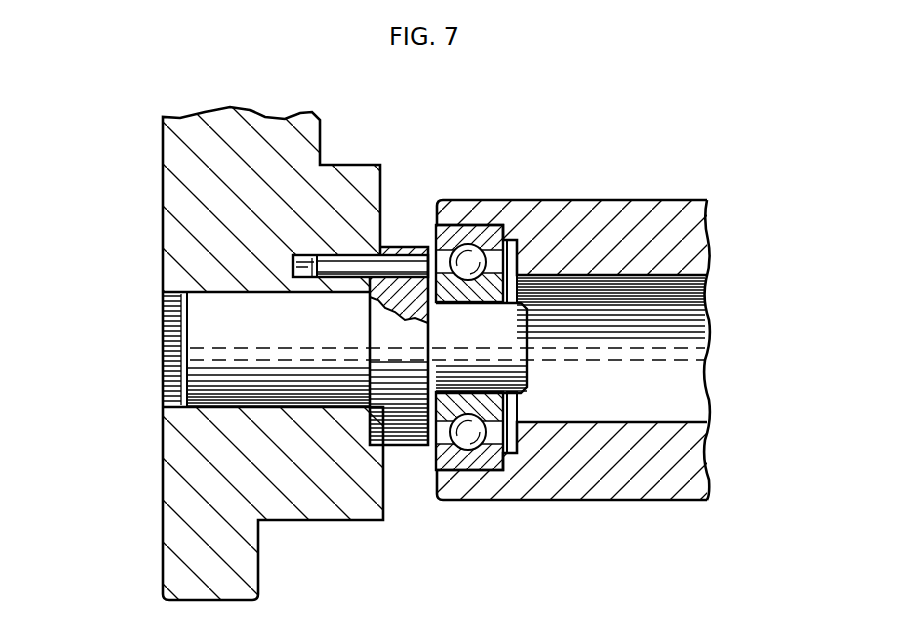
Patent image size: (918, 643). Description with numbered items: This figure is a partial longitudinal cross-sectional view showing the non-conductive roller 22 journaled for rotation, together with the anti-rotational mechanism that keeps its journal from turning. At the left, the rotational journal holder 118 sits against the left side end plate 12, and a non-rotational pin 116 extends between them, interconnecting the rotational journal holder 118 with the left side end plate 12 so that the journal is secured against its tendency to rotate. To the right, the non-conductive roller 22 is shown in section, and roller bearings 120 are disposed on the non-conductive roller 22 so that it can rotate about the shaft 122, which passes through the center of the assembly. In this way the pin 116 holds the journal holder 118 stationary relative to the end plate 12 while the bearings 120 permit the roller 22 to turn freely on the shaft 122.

The left side end plate 12 is at (200, 207).
The non-conductive roller 22 is at (610, 200).
The non-rotational pin 116 is at (340, 262).
The rotational journal holder 118 is at (400, 433).
The roller bearings 120 is at (478, 460).
The shaft 122 is at (474, 336).